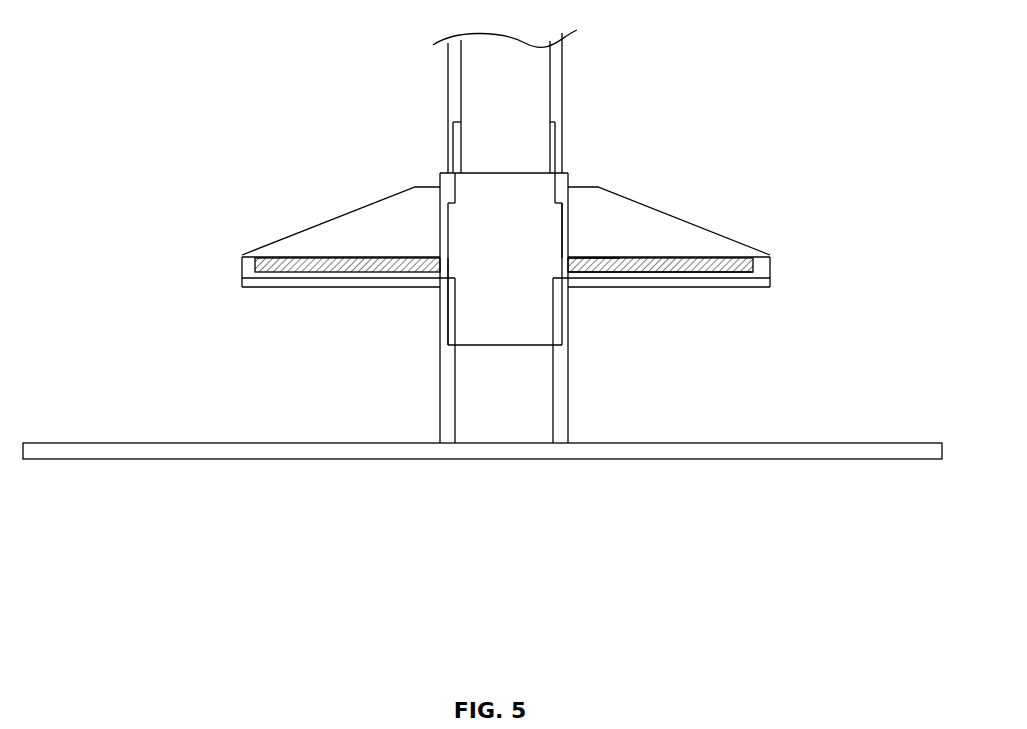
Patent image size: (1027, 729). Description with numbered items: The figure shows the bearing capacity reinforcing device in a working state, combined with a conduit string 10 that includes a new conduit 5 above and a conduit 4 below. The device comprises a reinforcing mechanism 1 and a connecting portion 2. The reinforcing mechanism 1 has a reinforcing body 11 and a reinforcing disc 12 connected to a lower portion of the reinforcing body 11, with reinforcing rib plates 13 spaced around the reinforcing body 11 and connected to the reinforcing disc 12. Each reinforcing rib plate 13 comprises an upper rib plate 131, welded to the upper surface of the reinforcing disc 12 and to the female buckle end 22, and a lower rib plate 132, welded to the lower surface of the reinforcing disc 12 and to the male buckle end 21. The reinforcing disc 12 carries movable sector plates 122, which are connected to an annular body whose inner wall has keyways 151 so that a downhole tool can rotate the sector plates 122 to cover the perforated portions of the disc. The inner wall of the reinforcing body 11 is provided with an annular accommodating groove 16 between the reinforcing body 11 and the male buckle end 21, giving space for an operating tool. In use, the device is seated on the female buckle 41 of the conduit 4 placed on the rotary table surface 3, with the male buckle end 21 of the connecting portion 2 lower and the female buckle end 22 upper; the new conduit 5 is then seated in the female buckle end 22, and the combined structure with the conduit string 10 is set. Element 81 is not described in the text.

The conduit string 10 is at (402, 74).
The conduit 5 is at (558, 77).
The sealing ring 81 is at (553, 148).
The reinforcing mechanism 1 is at (808, 143).
The reinforcing body 11 is at (568, 186).
The reinforcing disc 12 is at (723, 258).
The sector plate 122 is at (625, 260).
The reinforcing rib plate 13 is at (498, 212).
The upper rib plate 131 is at (343, 233).
The lower rib plate 132 is at (313, 283).
The keyway 151 is at (572, 258).
The annular accommodating groove 16 is at (562, 218).
The connecting portion 2 is at (195, 117).
The male buckle end 21 is at (447, 310).
The female buckle end 22 is at (452, 152).
The rotary table surface 3 is at (325, 450).
The conduit 4 is at (448, 398).
The female buckle 41 is at (445, 318).